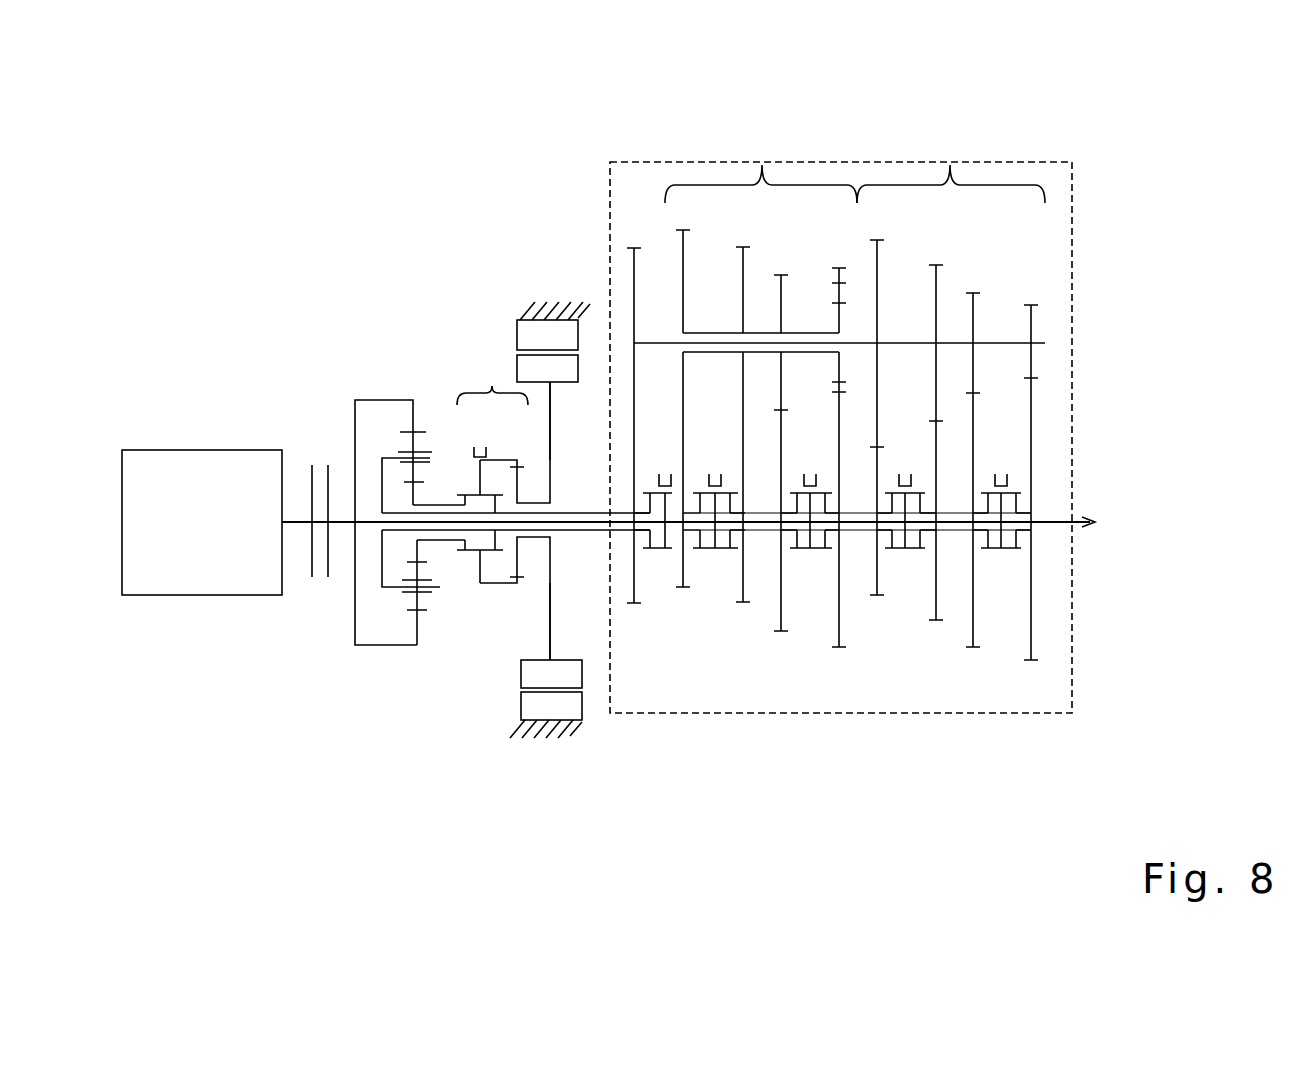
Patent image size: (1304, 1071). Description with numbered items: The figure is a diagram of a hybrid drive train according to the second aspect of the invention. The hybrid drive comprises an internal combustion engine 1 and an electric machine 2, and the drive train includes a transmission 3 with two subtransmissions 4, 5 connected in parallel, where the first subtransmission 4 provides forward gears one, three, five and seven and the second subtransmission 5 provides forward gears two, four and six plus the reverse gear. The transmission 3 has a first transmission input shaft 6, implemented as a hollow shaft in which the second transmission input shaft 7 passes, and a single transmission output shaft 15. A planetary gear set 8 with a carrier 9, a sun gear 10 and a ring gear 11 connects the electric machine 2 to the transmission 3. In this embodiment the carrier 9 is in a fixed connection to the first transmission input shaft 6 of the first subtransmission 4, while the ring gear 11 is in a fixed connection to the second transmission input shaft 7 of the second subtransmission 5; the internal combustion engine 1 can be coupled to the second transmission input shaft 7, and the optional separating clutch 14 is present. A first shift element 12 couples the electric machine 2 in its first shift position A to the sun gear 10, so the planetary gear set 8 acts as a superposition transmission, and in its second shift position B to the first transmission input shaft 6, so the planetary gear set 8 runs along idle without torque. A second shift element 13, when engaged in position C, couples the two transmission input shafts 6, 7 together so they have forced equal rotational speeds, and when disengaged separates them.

The internal combustion engine 1 is at (225, 478).
The electric machine 2 is at (540, 283).
The transmission 3 is at (1025, 150).
The first subtransmission 4 is at (950, 163).
The second subtransmission 5 is at (762, 165).
The first transmission input shaft 6 is at (588, 530).
The second transmission input shaft 7 is at (682, 530).
The planetary gear set 8 is at (372, 385).
The carrier 9 is at (373, 575).
The sun gear 10 is at (417, 547).
The ring gear 11 is at (415, 418).
The first shift element 12 is at (492, 388).
The second shift element 13 is at (658, 422).
The separating clutch 14 is at (322, 592).
The transmission output shaft 15 is at (1062, 555).